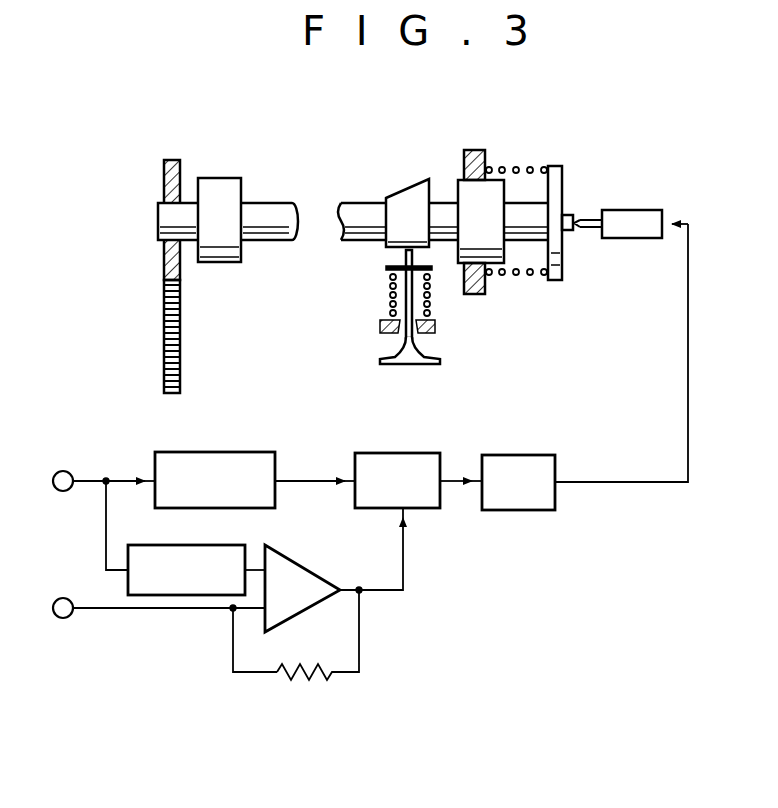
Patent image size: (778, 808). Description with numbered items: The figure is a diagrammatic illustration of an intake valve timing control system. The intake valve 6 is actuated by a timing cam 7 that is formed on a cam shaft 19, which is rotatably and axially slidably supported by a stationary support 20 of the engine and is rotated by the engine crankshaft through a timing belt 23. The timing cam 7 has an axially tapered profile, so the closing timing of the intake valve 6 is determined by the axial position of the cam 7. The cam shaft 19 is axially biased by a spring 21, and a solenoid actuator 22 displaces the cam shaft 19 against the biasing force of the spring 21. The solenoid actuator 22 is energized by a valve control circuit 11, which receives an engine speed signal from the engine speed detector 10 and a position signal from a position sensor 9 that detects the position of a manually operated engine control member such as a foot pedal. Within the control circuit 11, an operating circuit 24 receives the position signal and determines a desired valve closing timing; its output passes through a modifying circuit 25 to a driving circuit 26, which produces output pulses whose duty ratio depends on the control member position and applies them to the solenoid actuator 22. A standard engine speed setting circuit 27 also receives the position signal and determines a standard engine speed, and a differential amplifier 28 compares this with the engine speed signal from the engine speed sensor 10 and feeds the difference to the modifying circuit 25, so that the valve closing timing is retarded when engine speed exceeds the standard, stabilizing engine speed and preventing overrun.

The intake valve 6 is at (429, 352).
The timing cam 7 is at (412, 197).
The position sensor 9 is at (66, 471).
The engine speed detector 10 is at (68, 620).
The valve control circuit 11 is at (484, 563).
The cam shaft 19 is at (357, 243).
The stationary support 20 is at (475, 149).
The spring 21 is at (529, 277).
The solenoid actuator 22 is at (631, 209).
The timing belt 23 is at (165, 320).
The operating circuit 24 is at (215, 451).
The modifying circuit 25 is at (410, 452).
The driving circuit 26 is at (535, 454).
The standard engine speed setting circuit 27 is at (226, 545).
The differential amplifier 28 is at (320, 571).